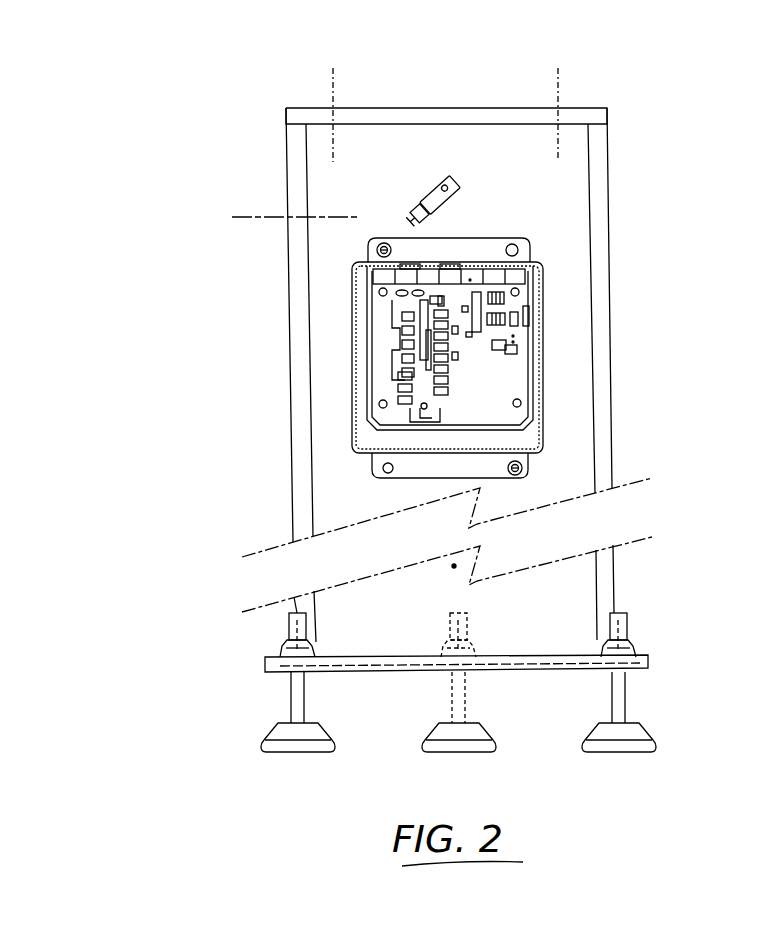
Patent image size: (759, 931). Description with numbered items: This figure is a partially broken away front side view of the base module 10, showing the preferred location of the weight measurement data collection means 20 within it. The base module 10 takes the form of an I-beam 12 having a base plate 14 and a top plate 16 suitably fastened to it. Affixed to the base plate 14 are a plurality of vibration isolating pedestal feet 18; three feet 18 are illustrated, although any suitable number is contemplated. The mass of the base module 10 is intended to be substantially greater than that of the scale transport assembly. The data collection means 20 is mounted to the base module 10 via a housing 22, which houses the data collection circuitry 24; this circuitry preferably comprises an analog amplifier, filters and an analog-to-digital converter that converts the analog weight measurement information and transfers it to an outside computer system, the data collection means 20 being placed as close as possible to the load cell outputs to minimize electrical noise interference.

The base module 10 is at (238, 244).
The I-beam 12 is at (560, 194).
The base plate 14 is at (267, 660).
The top plate 16 is at (593, 115).
The vibration isolating pedestal feet 18 is at (415, 762).
The data collection means 20 is at (566, 405).
The housing 22 is at (346, 420).
The circuit board 24 is at (386, 351).